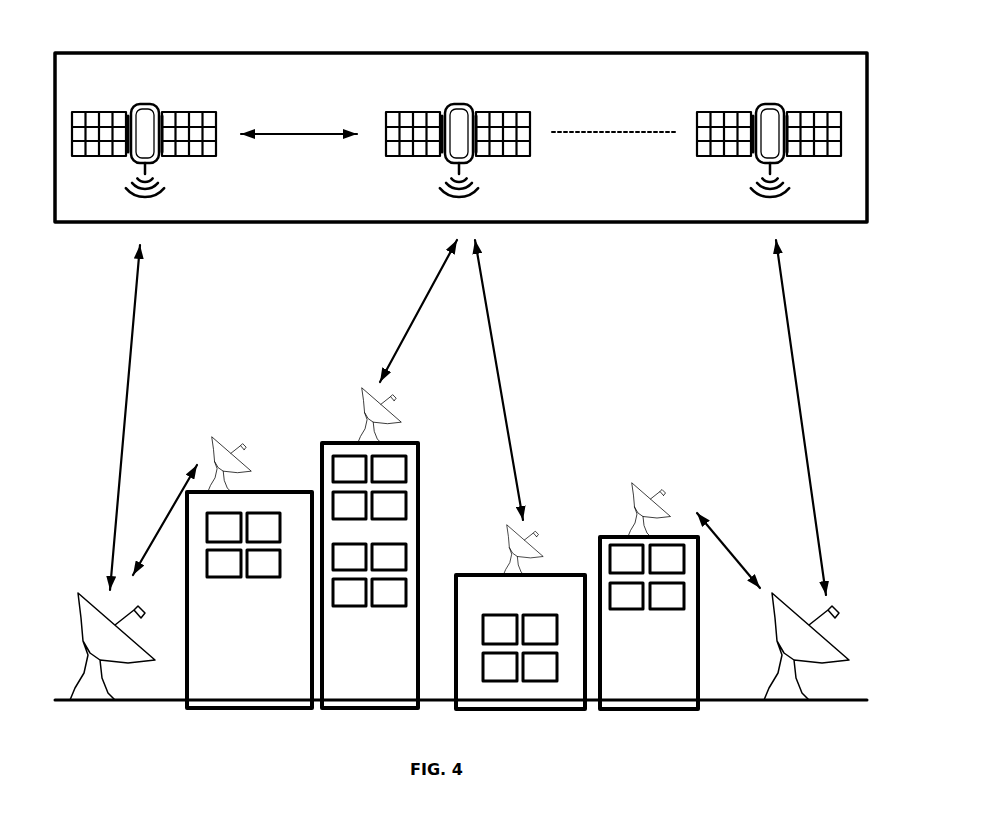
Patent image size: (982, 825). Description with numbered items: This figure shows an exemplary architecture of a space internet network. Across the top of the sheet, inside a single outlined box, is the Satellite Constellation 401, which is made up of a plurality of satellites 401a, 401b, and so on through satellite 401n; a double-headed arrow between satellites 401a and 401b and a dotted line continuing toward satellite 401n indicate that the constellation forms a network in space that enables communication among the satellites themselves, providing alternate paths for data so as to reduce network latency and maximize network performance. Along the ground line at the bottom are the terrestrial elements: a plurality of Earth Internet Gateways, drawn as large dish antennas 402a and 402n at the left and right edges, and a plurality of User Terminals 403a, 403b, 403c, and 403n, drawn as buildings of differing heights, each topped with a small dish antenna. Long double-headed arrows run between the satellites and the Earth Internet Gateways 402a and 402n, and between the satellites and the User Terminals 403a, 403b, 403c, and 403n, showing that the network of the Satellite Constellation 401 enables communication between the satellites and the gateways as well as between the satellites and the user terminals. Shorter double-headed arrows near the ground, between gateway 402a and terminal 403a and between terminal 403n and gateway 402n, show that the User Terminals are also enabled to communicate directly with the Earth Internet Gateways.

The Satellite Constellation 401 is at (338, 52).
The satellite 401a is at (168, 112).
The satellite 401b is at (456, 106).
The satellite 401n is at (768, 106).
The Earth Internet Gateway 402a is at (88, 592).
The Earth Internet Gateway 402n is at (774, 592).
The User Terminal 403a is at (250, 470).
The User Terminal 403b is at (398, 420).
The User Terminal 403c is at (508, 528).
The User Terminal 403n is at (676, 512).